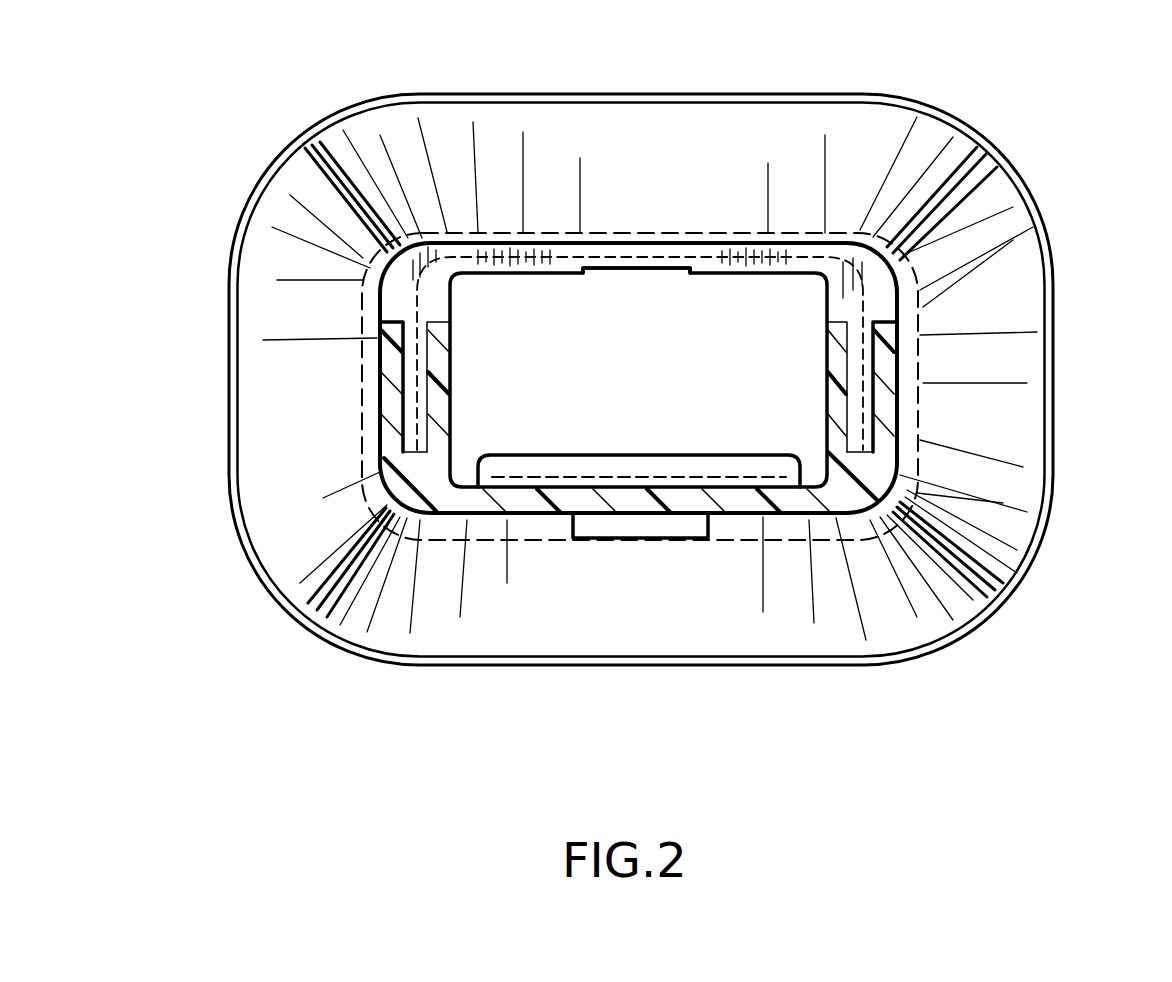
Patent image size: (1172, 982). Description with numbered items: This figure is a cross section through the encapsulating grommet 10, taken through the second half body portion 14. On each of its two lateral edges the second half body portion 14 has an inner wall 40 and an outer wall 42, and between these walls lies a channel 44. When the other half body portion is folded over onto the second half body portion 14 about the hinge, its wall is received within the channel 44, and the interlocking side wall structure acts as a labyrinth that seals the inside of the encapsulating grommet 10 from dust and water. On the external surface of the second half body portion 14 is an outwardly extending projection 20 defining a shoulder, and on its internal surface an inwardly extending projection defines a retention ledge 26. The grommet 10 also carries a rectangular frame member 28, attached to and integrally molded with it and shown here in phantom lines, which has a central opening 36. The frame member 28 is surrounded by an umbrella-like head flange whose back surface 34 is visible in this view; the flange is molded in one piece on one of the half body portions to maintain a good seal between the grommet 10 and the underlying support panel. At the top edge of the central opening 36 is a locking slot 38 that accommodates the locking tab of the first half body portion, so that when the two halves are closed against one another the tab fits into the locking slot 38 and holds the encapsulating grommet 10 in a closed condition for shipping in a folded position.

The encapsulating grommet 10 is at (731, 74).
The second half body portion 14 is at (900, 467).
The outwardly extending projection 20 is at (650, 527).
The retention ledge 26 is at (780, 463).
The rectangular frame member 28 is at (373, 270).
The back surface 34 is at (1000, 232).
The central opening 36 is at (648, 383).
The locking slot 38 is at (690, 262).
The inner wall 40 is at (455, 338).
The outer wall 42 is at (387, 367).
The channel 44 is at (383, 283).